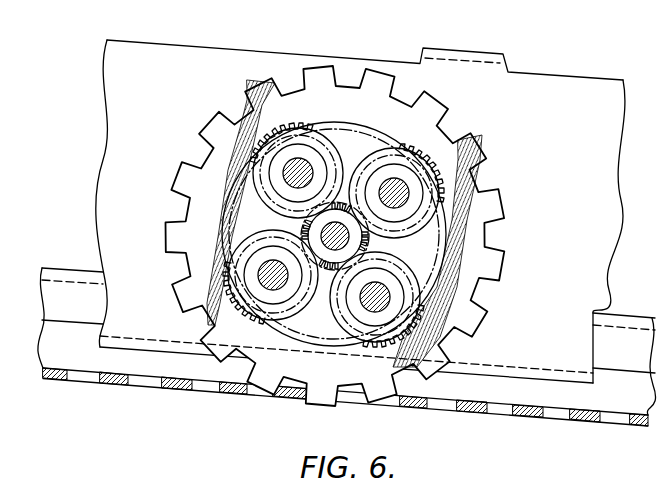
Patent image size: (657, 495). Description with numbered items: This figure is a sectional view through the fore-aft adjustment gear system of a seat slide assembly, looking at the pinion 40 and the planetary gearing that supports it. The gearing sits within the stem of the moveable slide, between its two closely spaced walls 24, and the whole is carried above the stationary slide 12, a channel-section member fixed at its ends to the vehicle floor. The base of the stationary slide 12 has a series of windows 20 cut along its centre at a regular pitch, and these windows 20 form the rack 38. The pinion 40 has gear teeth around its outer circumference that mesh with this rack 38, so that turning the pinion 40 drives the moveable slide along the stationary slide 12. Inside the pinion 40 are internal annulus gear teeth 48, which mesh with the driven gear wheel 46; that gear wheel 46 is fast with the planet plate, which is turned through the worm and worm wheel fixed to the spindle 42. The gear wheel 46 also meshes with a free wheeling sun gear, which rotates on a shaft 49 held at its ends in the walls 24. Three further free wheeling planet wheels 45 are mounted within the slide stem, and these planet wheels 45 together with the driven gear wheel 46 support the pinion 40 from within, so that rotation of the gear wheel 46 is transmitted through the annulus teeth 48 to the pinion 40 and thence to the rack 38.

The stationary slide 12 is at (90, 355).
The windows 20 is at (261, 395).
The walls 24 is at (560, 130).
The rack 38 is at (523, 417).
The pinion 40 is at (432, 360).
The spindle 42 is at (410, 190).
The free wheeling planet wheels 45 is at (266, 165).
The gear wheel 46 is at (424, 184).
The internal annulus gear teeth 48 is at (330, 125).
The shaft 49 is at (330, 233).